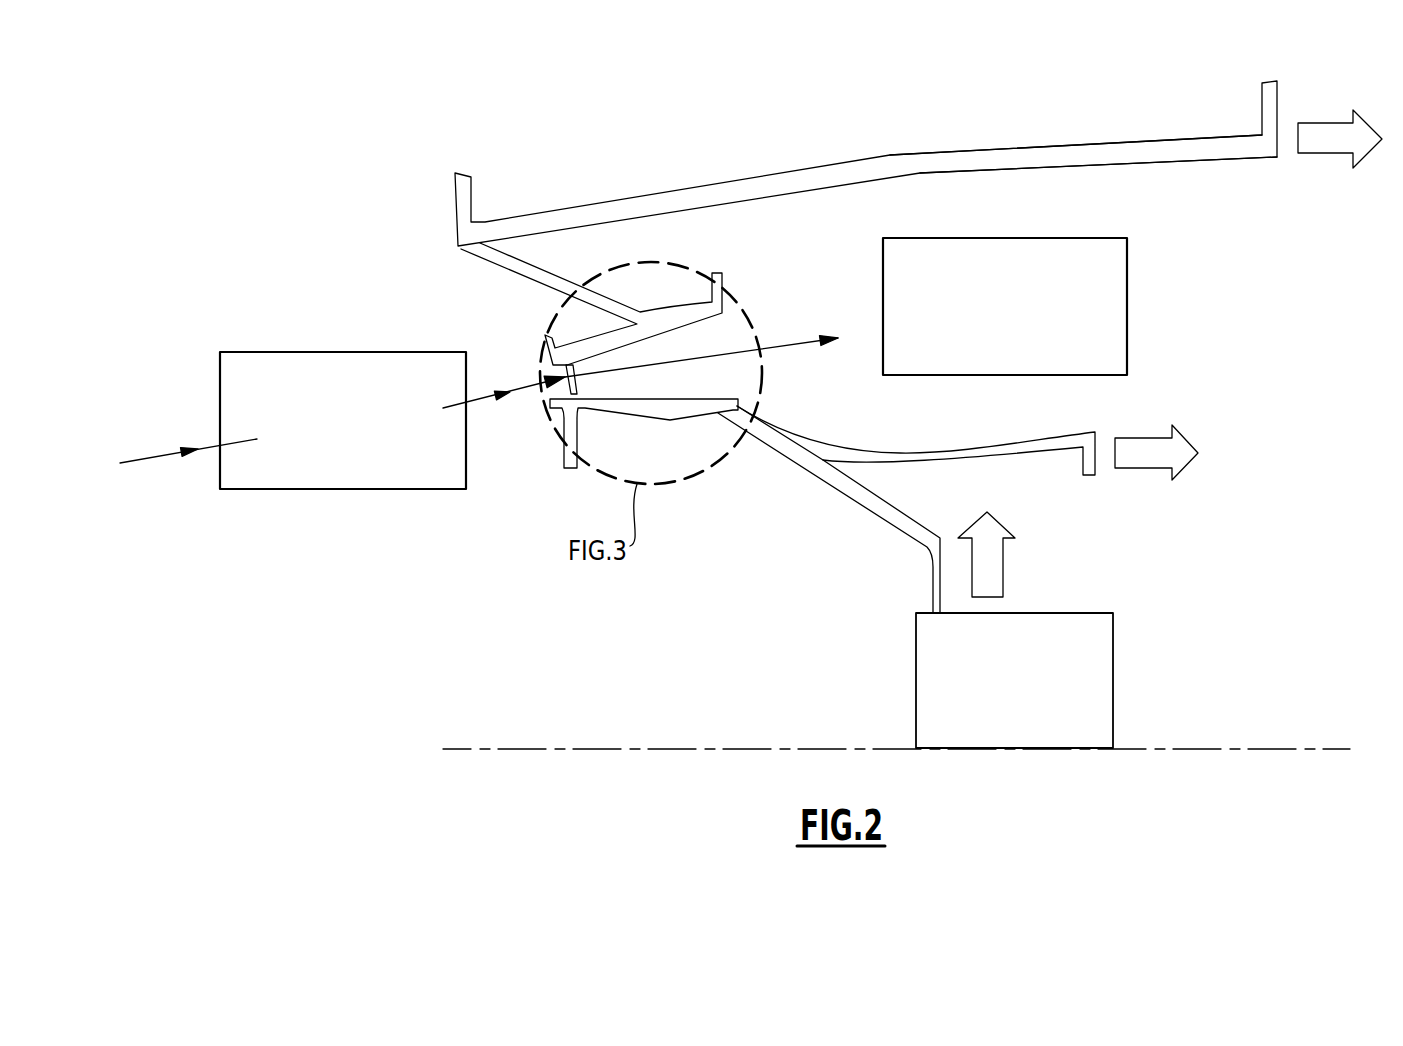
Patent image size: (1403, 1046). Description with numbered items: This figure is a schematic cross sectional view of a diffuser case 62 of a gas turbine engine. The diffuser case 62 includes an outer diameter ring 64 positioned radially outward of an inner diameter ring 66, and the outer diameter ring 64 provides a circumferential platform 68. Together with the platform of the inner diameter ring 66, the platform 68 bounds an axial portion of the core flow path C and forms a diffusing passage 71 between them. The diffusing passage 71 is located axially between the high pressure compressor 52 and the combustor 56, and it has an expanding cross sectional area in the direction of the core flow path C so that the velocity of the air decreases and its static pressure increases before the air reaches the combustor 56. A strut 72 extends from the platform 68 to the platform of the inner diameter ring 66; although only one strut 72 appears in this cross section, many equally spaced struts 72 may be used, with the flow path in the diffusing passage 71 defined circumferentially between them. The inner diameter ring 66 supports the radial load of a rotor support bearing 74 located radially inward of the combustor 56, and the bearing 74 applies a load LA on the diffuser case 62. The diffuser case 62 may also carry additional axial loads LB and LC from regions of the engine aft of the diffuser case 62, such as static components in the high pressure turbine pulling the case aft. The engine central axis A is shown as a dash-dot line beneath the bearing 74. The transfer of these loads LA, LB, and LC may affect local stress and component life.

The high pressure compressor 52 is at (302, 352).
The combustor 56 is at (1113, 263).
The diffuser case 62 is at (886, 136).
The outer diameter ring 64 is at (1052, 157).
The inner diameter ring 66 is at (810, 463).
The circumferential platform 68 is at (683, 308).
The diffusing passage 71 is at (542, 376).
The strut 72 is at (702, 340).
The rotor support bearing 74 is at (1100, 653).
The core flow path C is at (807, 338).
The engine central axis A is at (462, 748).
The load LA is at (995, 577).
The load LB is at (1148, 458).
The load LC is at (1333, 142).